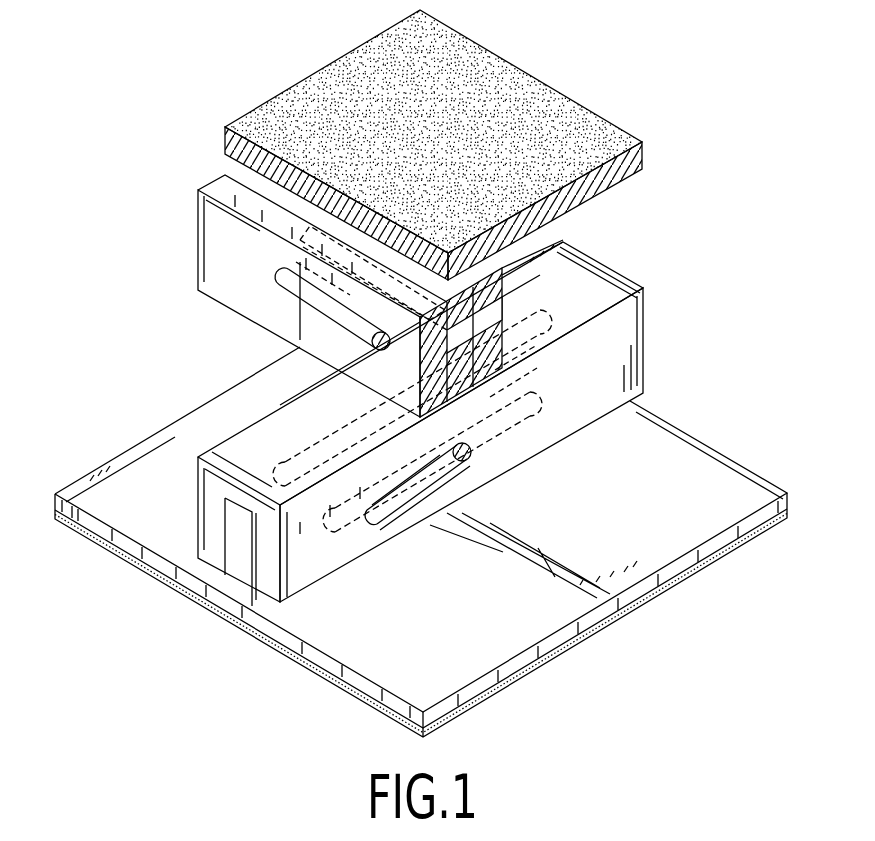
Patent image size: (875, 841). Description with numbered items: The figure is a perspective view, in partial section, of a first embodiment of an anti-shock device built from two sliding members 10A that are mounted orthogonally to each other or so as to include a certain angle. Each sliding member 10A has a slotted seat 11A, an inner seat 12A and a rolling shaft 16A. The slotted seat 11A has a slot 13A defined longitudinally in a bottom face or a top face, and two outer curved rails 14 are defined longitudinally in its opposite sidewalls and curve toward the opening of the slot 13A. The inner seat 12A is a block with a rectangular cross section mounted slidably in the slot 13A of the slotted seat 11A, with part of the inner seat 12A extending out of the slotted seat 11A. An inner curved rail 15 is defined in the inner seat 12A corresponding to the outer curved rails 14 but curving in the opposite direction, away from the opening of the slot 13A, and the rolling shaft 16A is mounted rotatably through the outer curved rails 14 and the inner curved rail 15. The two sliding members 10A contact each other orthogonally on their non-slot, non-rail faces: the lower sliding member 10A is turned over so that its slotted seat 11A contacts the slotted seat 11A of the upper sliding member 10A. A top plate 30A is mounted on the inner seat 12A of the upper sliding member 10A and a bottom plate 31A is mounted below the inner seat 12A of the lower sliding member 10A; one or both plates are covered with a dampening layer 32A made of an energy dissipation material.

The sliding member 10A is at (646, 363).
The slotted seat 11A is at (222, 250).
The inner seat 12A is at (243, 170).
The slot 13A is at (237, 557).
The outer curved rail 14 is at (372, 517).
The inner curved rail 15 is at (522, 458).
The rolling shaft 16A is at (372, 341).
The top plate 30A is at (645, 164).
The bottom plate 31A is at (703, 473).
The dampening layer 32A is at (556, 114).